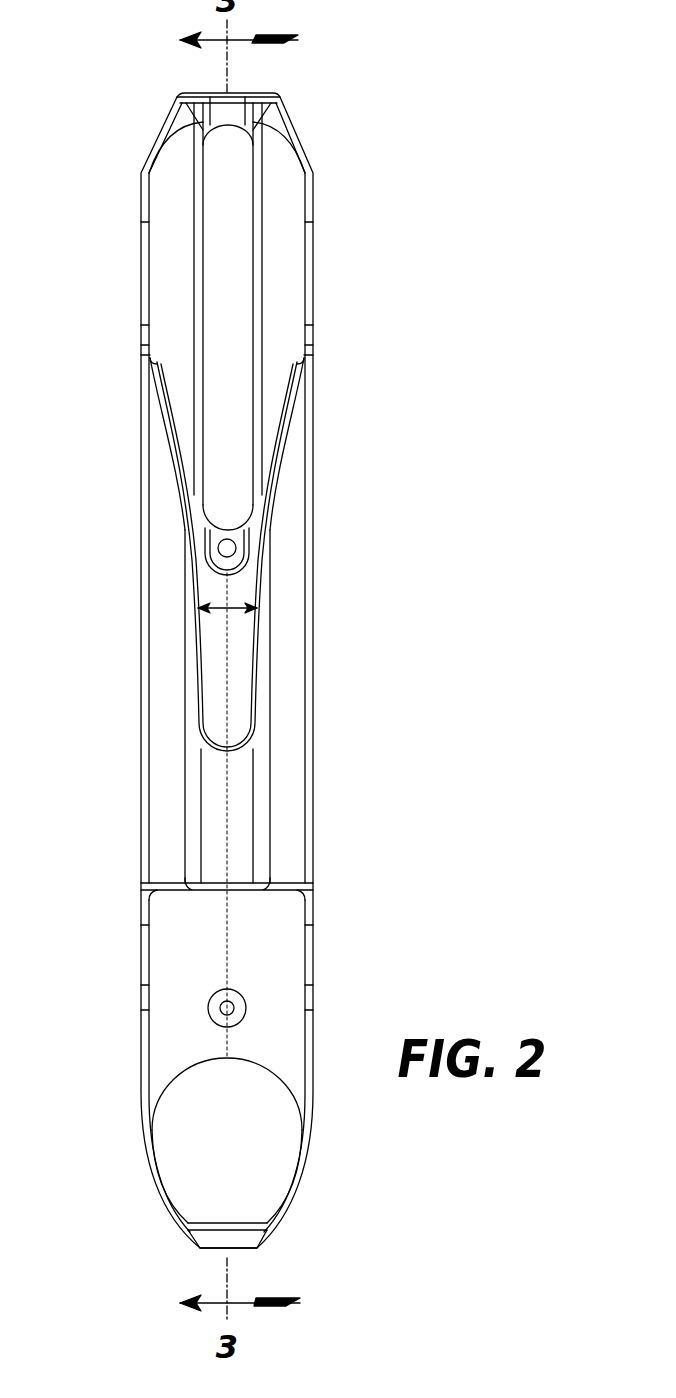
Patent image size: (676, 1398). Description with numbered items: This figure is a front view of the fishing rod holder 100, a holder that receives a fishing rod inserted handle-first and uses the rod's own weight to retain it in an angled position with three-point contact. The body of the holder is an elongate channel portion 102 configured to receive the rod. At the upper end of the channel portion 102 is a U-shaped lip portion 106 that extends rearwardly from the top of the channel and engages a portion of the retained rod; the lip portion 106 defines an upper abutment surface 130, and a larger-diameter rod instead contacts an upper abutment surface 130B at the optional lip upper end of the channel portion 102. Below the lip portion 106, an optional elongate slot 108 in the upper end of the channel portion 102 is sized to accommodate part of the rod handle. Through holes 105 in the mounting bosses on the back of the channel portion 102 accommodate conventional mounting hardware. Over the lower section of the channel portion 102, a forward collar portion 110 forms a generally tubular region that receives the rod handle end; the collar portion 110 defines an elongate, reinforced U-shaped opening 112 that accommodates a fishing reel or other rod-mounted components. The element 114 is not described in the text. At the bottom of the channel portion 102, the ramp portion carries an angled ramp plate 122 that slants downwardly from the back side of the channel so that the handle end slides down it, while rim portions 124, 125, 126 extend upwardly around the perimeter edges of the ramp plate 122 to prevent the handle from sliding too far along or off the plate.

The fishing rod holder 100 is at (343, 168).
The channel portion 102 is at (279, 221).
The through holes 105 is at (220, 548).
The U-shaped lip portion 106 is at (232, 97).
The slot 108 is at (226, 280).
The collar portion 110 is at (283, 681).
The U-shaped opening 112 is at (236, 608).
The lower web portion 114 is at (228, 824).
The angled ramp plate 122 is at (227, 1144).
The rim portion 124 is at (155, 1162).
The rim portion 125 is at (218, 1243).
The rim portion 126 is at (305, 1120).
The upper abutment surface 130 is at (222, 97).
The upper abutment surface 130B is at (192, 135).